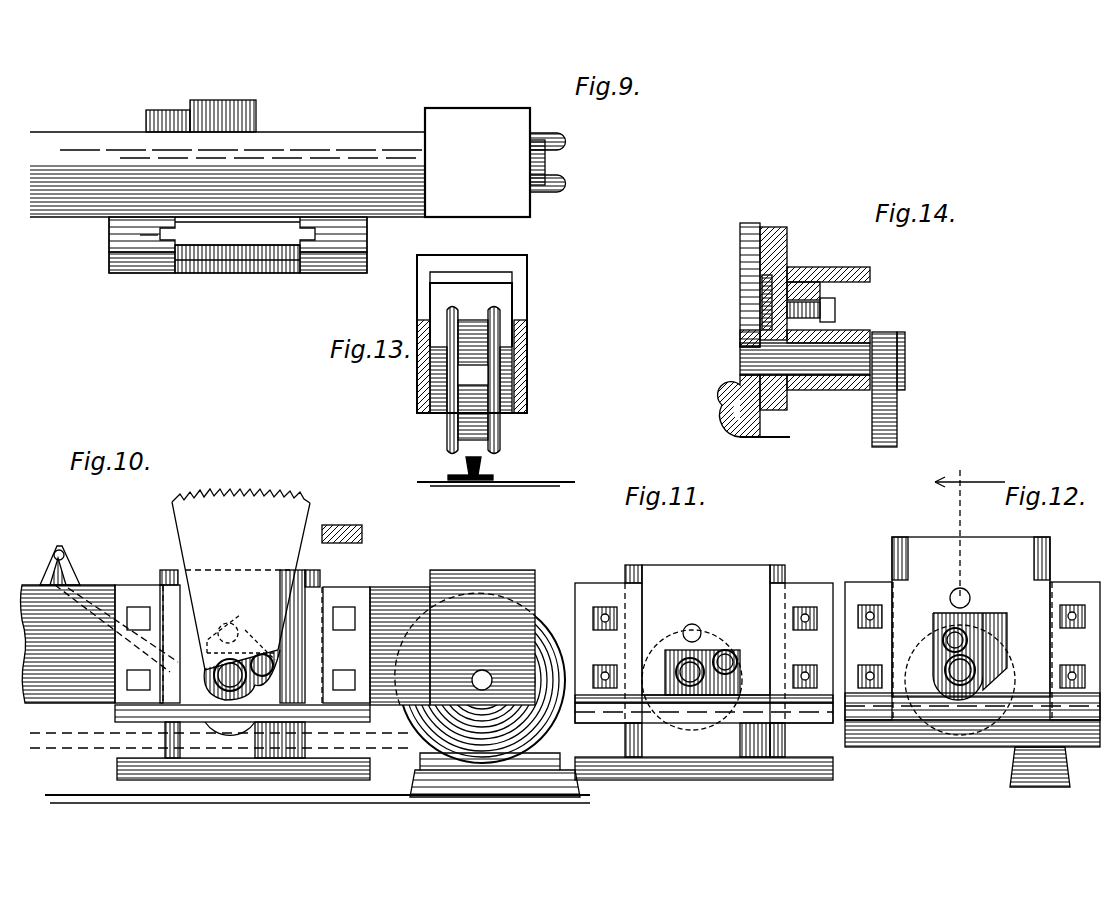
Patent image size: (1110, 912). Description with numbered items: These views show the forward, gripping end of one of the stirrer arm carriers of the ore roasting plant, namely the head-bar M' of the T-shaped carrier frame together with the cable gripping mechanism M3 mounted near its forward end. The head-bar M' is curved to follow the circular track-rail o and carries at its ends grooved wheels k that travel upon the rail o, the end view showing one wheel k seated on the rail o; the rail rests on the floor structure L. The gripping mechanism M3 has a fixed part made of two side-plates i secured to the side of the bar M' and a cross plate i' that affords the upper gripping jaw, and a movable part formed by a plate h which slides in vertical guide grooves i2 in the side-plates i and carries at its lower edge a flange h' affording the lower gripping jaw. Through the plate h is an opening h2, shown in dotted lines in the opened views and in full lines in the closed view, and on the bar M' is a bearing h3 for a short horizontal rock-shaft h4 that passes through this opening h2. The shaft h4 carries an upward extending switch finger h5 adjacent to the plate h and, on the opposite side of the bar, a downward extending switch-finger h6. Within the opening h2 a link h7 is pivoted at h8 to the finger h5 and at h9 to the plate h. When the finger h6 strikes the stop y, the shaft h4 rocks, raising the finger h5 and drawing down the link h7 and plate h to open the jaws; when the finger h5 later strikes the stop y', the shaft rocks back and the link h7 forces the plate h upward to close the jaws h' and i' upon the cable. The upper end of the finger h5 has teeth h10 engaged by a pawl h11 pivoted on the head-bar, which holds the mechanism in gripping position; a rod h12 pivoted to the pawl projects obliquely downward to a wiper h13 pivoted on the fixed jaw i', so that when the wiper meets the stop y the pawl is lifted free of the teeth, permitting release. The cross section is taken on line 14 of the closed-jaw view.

In FIG. 9, the head-bar M' is at (280, 162).
In FIG. 13, the head-bar M' is at (449, 334).
In FIG. 14, the head-bar M' is at (828, 263).
In FIG. 10, the head-bar M' is at (452, 618).
In FIG. 9, the cable gripping mechanism M3 is at (238, 261).
In FIG. 14, the cable gripping mechanism M3 is at (761, 312).
In FIG. 10, the cable gripping mechanism M3 is at (196, 624).
In FIG. 11, the cable gripping mechanism M3 is at (704, 644).
In FIG. 12, the cable gripping mechanism M3 is at (968, 627).
In FIG. 9, the plate h is at (237, 264).
In FIG. 14, the plate h is at (783, 269).
In FIG. 10, the plate h is at (315, 617).
In FIG. 11, the plate h is at (722, 557).
In FIG. 12, the plate h is at (935, 530).
In FIG. 14, the flange h' is at (746, 439).
In FIG. 10, the flange h' is at (220, 752).
In FIG. 11, the flange h' is at (704, 779).
In FIG. 12, the flange h' is at (972, 778).
In FIG. 10, the opening h2 is at (230, 735).
In FIG. 11, the opening h2 is at (672, 652).
In FIG. 12, the opening h2 is at (1005, 628).
In FIG. 14, the bearing h3 is at (848, 333).
In FIG. 14, the rock-shaft h4 is at (833, 360).
In FIG. 10, the rock-shaft h4 is at (172, 672).
In FIG. 11, the rock-shaft h4 is at (690, 700).
In FIG. 12, the rock-shaft h4 is at (978, 678).
In FIG. 9, the switch finger h5 is at (192, 262).
In FIG. 14, the switch finger h5 is at (748, 240).
In FIG. 10, the switch finger h5 is at (241, 586).
In FIG. 9, the switch-finger h6 is at (186, 116).
In FIG. 14, the switch-finger h6 is at (897, 420).
In FIG. 11, the switch-finger h6 is at (640, 718).
In FIG. 12, the switch-finger h6 is at (985, 755).
In FIG. 10, the link h7 is at (264, 652).
In FIG. 11, the link h7 is at (728, 650).
In FIG. 12, the link h7 is at (997, 638).
In FIG. 14, the pivot h8 is at (745, 338).
In FIG. 10, the pivot h8 is at (301, 646).
In FIG. 11, the pivot h8 is at (733, 652).
In FIG. 12, the pivot h8 is at (948, 632).
In FIG. 14, the pivot h9 is at (762, 278).
In FIG. 10, the pivot h9 is at (236, 624).
In FIG. 11, the pivot h9 is at (694, 624).
In FIG. 12, the pivot h9 is at (967, 592).
In FIG. 10, the teeth h10 is at (240, 490).
In FIG. 10, the pawl h11 is at (46, 568).
In FIG. 10, the rod h12 is at (120, 648).
In FIG. 10, the wiper h13 is at (275, 722).
In FIG. 11, the wiper h13 is at (738, 742).
In FIG. 12, the wiper h13 is at (1000, 760).
In FIG. 9, the side-plates i is at (238, 234).
In FIG. 10, the side-plates i is at (240, 666).
In FIG. 11, the side-plates i is at (705, 647).
In FIG. 12, the side-plates i is at (971, 646).
In FIG. 14, the cross plate i' is at (736, 406).
In FIG. 10, the cross plate i' is at (216, 755).
In FIG. 11, the cross plate i' is at (798, 769).
In FIG. 12, the cross plate i' is at (861, 770).
In FIG. 9, the guide grooves i2 is at (160, 232).
In FIG. 9, the grooved wheels k is at (548, 157).
In FIG. 13, the grooved wheels k is at (483, 342).
In FIG. 10, the grooved wheels k is at (430, 722).
In FIG. 13, the track-rail o is at (472, 470).
In FIG. 10, the track-rail o is at (432, 775).
In FIG. 12, the stop y is at (1052, 767).
In FIG. 10, the stop y' is at (351, 514).
In FIG. 10, the track L is at (309, 782).
In FIG. 12, the section line 14 is at (970, 526).